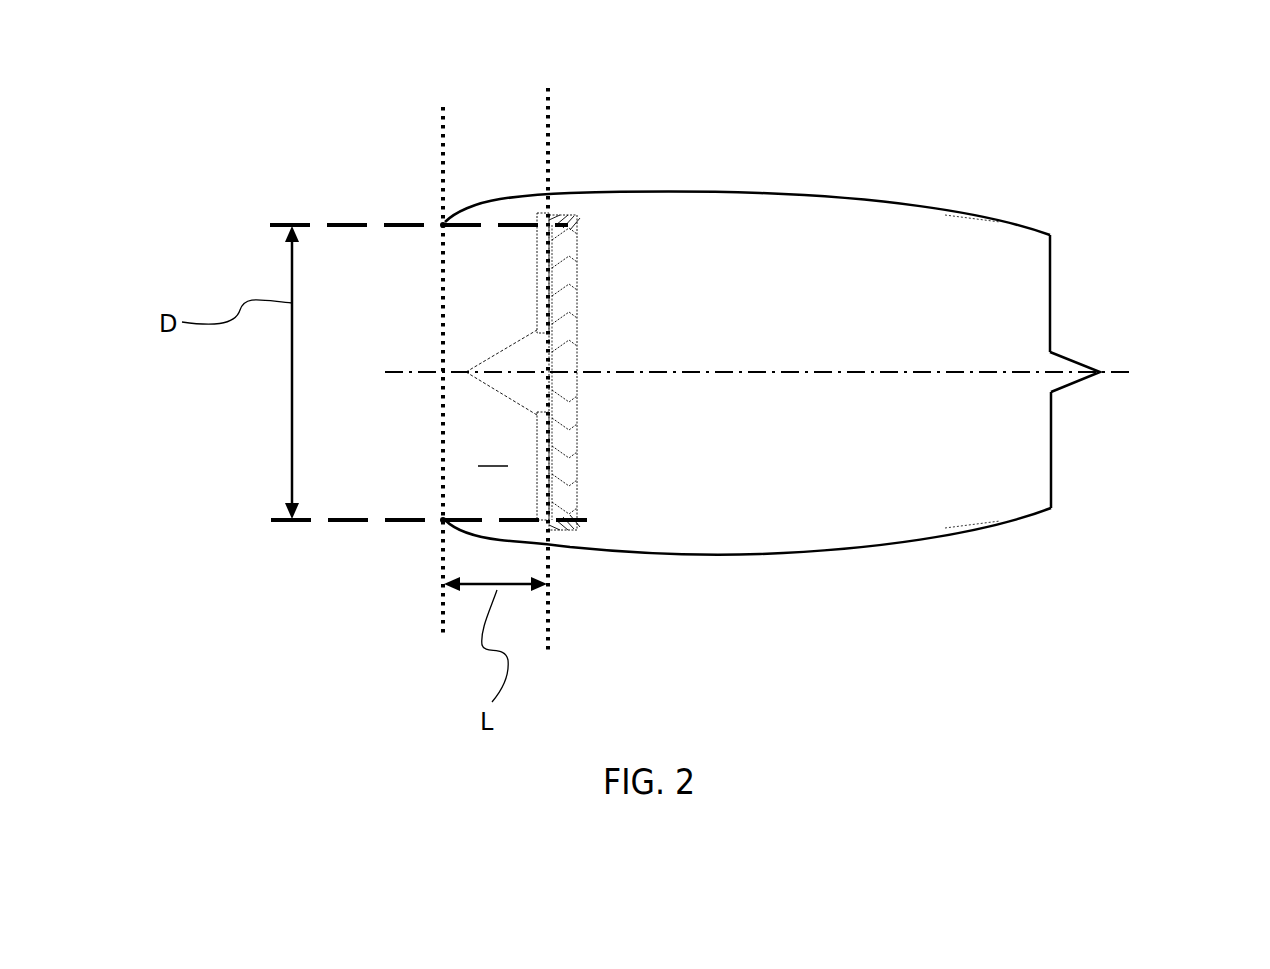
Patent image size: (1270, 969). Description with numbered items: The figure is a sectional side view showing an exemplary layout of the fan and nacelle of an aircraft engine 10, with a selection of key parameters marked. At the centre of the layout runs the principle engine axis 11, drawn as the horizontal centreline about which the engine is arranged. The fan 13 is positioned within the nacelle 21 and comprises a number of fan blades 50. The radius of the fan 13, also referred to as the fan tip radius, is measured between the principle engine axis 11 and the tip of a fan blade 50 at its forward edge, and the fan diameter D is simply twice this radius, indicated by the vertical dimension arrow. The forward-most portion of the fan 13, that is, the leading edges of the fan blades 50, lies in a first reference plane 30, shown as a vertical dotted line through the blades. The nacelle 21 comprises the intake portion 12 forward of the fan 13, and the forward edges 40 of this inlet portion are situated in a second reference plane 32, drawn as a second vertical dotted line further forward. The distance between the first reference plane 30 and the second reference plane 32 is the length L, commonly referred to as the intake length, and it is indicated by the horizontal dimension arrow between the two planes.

The aircraft engine 10 is at (909, 624).
The principle engine axis 11 is at (1117, 373).
The intake portion 12 is at (492, 454).
The fan 13 is at (577, 475).
The nacelle 21 is at (913, 200).
The first reference plane 30 is at (548, 163).
The second reference plane 32 is at (442, 148).
The forward edges 40 is at (442, 221).
The fan blades 50 is at (575, 453).